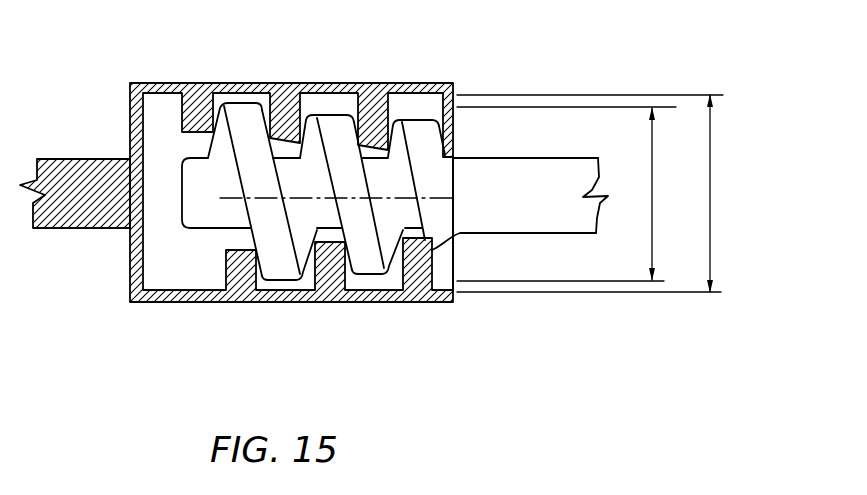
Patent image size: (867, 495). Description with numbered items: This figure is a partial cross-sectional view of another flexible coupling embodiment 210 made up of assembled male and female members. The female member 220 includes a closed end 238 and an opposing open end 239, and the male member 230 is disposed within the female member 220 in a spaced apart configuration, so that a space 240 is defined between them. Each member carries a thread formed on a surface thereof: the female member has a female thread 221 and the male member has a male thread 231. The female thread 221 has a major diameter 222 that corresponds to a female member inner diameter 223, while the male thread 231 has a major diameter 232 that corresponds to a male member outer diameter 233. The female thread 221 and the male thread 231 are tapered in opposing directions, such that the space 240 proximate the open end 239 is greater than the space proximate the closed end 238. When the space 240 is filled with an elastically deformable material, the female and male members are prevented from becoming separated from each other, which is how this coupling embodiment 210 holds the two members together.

The flexible coupling embodiment 210 is at (126, 355).
The female member 220 is at (77, 159).
The female thread 221 is at (215, 303).
The major diameter 222 is at (712, 189).
The female member inner diameter 223 is at (729, 186).
The male member 230 is at (505, 157).
The male thread 231 is at (240, 120).
The major diameter 232 is at (654, 158).
The male member outer diameter 233 is at (654, 191).
The closed end 238 is at (129, 250).
The open end 239 is at (449, 122).
The space 240 is at (329, 103).